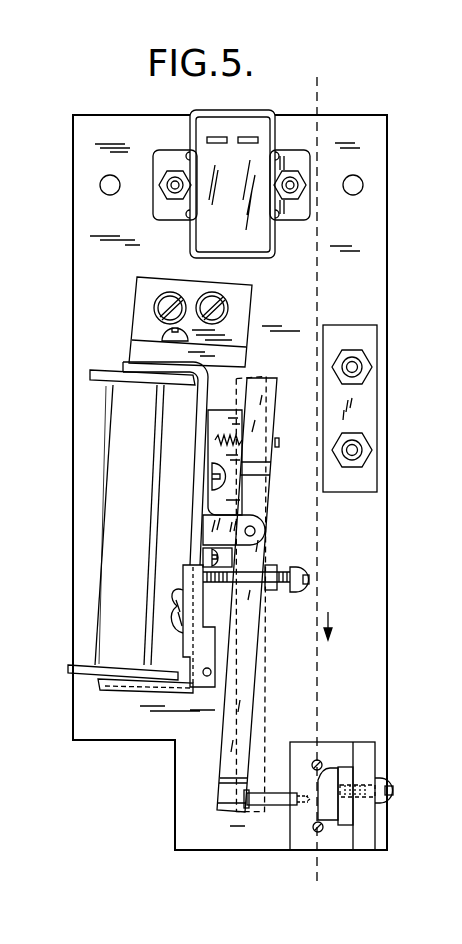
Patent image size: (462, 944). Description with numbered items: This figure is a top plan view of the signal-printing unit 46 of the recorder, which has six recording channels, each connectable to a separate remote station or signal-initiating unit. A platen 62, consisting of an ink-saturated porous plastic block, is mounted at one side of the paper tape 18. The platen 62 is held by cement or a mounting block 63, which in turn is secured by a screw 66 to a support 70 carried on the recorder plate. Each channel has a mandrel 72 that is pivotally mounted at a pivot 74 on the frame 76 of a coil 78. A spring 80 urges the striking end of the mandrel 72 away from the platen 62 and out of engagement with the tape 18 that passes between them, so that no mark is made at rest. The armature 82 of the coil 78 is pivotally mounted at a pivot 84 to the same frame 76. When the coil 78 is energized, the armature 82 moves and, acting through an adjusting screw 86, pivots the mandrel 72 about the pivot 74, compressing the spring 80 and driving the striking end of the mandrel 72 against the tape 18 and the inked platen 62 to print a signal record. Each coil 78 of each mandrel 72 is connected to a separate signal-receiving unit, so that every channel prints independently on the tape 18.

The tape 18 is at (317, 653).
The signal-printing unit 46 is at (154, 564).
The platen 62 is at (335, 768).
The mounting block 63 is at (347, 775).
The screw 66 is at (393, 786).
The support 70 is at (367, 835).
The mandrel 72 is at (223, 762).
The pivot 74 is at (255, 531).
The frame 76 is at (205, 392).
The coil 78 is at (113, 585).
The spring 80 is at (223, 433).
The armature 82 is at (106, 695).
The pivot 84 is at (206, 677).
The adjusting screw 86 is at (304, 573).